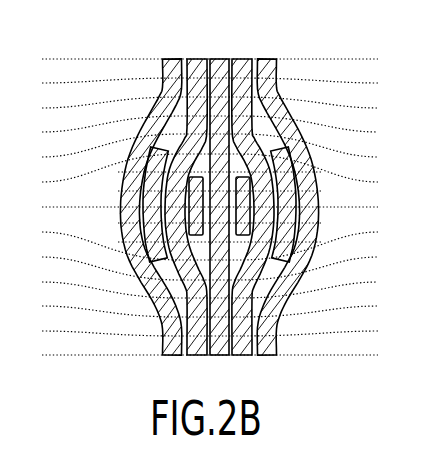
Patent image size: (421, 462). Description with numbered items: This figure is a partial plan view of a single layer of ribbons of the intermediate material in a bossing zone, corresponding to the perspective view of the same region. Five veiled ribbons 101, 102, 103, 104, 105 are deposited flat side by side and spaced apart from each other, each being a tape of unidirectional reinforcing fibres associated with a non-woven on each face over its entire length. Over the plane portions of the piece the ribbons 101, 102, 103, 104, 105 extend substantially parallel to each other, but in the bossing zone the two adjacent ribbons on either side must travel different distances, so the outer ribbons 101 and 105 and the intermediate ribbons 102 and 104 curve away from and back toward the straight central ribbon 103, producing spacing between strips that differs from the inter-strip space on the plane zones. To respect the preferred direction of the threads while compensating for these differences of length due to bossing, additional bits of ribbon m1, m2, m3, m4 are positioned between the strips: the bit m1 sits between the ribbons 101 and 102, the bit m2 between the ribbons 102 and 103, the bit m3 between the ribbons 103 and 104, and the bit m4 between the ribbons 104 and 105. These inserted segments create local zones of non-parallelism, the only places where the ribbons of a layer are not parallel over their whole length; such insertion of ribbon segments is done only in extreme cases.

The ribbon 101 is at (164, 88).
The ribbon 102 is at (200, 61).
The ribbon 103 is at (222, 62).
The ribbon 104 is at (241, 62).
The ribbon 105 is at (275, 88).
The bit of ribbon m1 is at (150, 191).
The bit of ribbon m2 is at (189, 226).
The bit of ribbon m3 is at (251, 185).
The bit of ribbon m4 is at (280, 227).